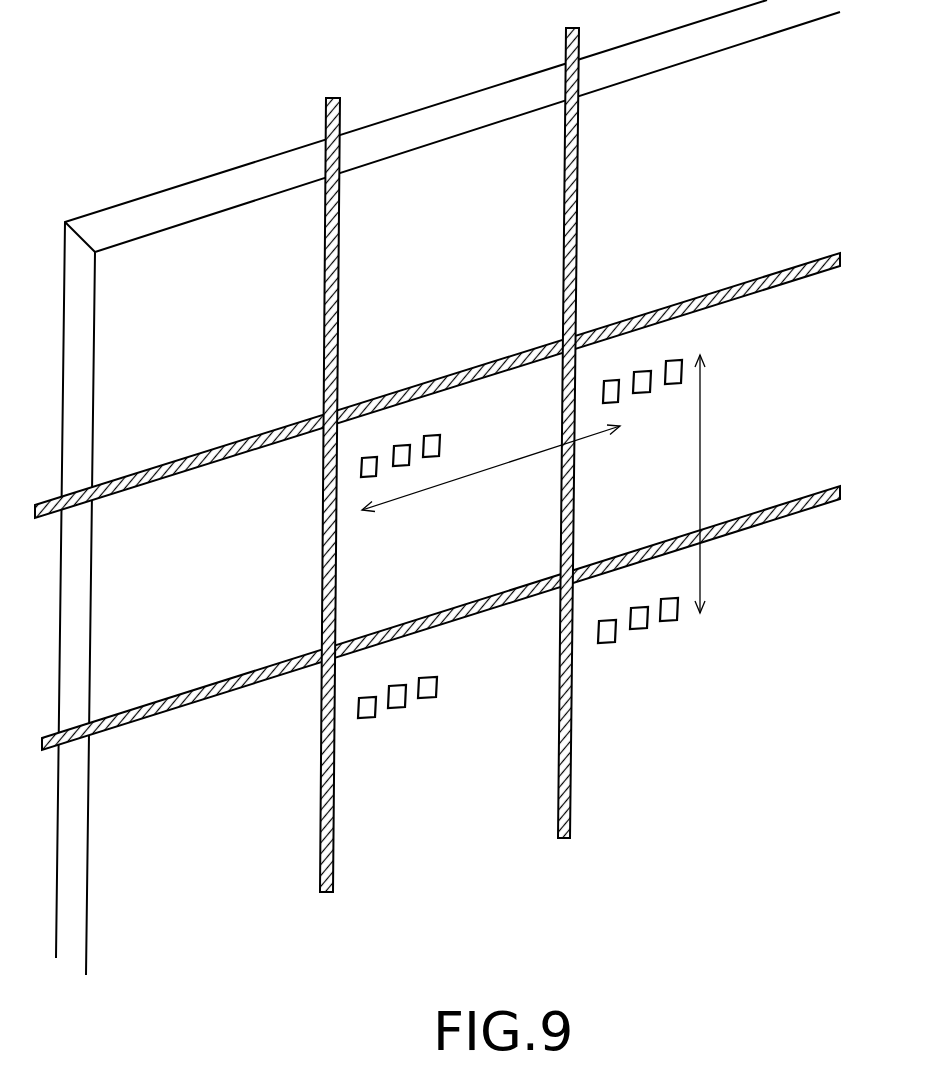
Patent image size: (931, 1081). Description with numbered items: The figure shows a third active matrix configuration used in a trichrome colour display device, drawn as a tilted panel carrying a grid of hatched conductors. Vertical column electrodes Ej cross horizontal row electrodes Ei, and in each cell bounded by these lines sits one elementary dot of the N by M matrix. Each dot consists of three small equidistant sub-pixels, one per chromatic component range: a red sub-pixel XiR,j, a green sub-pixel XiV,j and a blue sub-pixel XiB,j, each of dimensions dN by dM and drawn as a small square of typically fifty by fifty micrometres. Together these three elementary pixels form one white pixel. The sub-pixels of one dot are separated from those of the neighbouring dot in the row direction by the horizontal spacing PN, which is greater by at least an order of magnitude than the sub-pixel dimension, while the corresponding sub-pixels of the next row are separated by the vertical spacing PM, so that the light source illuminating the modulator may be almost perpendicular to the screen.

The column electrode Ej is at (327, 108).
The row electrode Ei is at (780, 271).
The red sub-pixel XiR,j is at (369, 457).
The green sub-pixel XiV,j is at (402, 445).
The blue sub-pixel XiB,j is at (432, 434).
The horizontal spacing PN is at (482, 473).
The vertical spacing PM is at (701, 477).